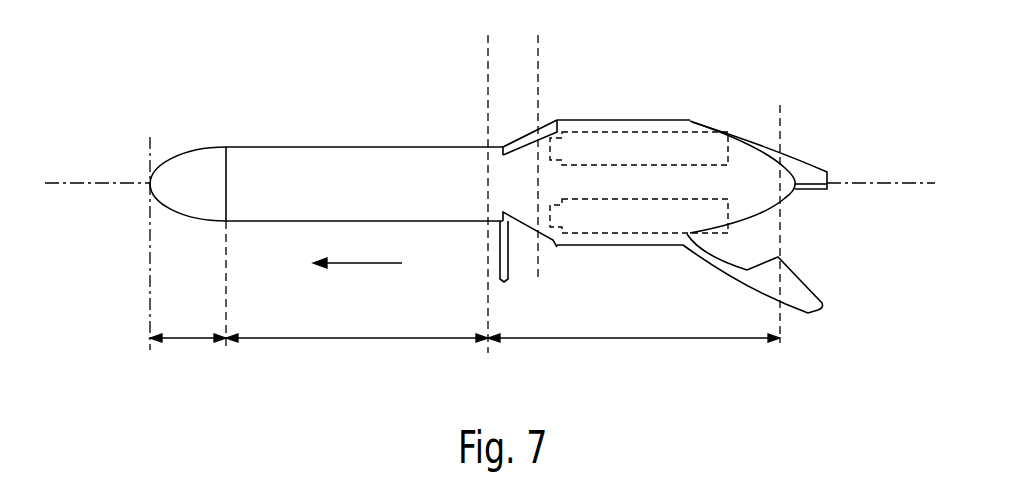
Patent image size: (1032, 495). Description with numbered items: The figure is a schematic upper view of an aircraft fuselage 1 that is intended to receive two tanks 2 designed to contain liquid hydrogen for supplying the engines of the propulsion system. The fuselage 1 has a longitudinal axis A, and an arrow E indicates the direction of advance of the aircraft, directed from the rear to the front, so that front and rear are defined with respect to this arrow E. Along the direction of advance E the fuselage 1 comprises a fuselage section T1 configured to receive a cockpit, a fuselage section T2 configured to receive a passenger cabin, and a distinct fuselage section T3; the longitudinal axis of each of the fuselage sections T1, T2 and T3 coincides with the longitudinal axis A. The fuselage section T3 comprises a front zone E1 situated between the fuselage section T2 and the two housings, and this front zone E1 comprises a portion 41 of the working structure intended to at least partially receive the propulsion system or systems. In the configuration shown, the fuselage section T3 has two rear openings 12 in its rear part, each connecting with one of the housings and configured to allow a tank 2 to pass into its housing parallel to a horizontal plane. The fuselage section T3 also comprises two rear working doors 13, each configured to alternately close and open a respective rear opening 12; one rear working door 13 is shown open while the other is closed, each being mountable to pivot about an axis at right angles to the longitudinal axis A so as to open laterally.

The fuselage 1 is at (380, 122).
The tank 2 is at (698, 210).
The rear opening 12 is at (765, 218).
The rear working door 13 is at (810, 162).
The portion of the working structure 41 is at (537, 47).
The longitudinal axis A is at (92, 185).
The arrow indicating direction of advance E is at (357, 245).
The front zone E1 is at (554, 96).
The fuselage section T1 is at (185, 152).
The fuselage section T2 is at (357, 322).
The fuselage section T3 is at (634, 322).